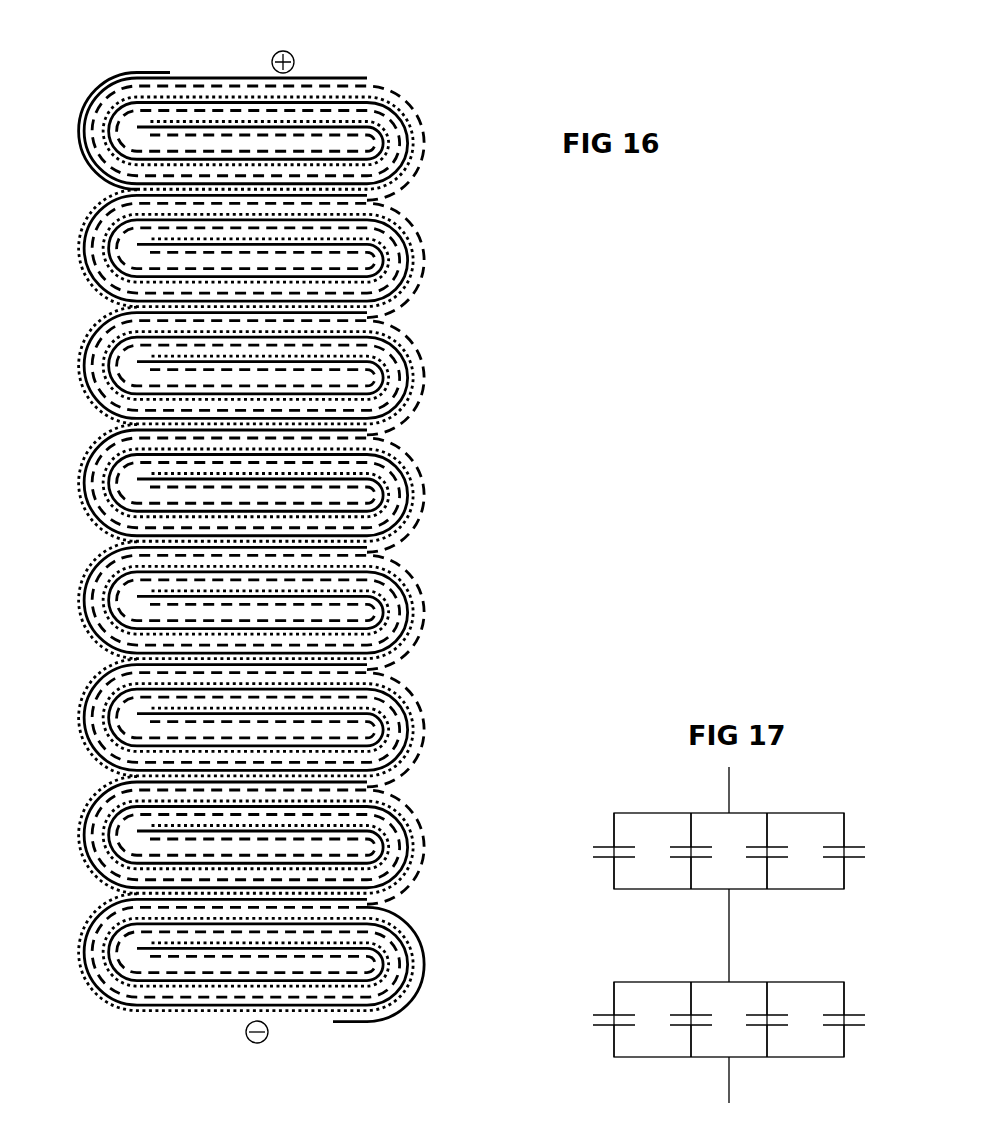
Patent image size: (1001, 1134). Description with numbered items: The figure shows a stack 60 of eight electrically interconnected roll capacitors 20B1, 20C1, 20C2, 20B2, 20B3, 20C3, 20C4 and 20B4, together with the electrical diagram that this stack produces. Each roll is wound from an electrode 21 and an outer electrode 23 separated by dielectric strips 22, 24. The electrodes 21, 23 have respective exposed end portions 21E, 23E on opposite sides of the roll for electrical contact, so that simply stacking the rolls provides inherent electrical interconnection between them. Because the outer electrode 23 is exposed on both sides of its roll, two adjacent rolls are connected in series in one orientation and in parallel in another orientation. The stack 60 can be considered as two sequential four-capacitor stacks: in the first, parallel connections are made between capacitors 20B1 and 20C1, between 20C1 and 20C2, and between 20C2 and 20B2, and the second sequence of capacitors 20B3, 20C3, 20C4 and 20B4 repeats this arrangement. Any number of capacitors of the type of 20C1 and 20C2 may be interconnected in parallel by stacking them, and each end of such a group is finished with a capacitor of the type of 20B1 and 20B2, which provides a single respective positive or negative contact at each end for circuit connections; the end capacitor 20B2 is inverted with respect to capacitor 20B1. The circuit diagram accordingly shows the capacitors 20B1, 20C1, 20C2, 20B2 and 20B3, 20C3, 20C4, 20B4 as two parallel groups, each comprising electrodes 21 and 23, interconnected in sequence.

In FIG. 16, the stack 60 is at (80, 68).
In FIG. 16, the electrode 21 is at (212, 88).
In FIG. 17, the electrode 21 is at (604, 864).
In FIG. 16, the exposed end portion 21E is at (415, 264).
In FIG. 16, the dielectric strip 22 is at (246, 78).
In FIG. 16, the outer electrode 23 is at (92, 147).
In FIG. 17, the outer electrode 23 is at (604, 848).
In FIG. 16, the exposed end portion 23E is at (312, 78).
In FIG. 16, the dielectric strip 24 is at (170, 72).
In FIG. 16, the capacitor 20B1 is at (441, 101).
In FIG. 17, the capacitor 20B1 is at (614, 808).
In FIG. 16, the capacitor 20B2 is at (438, 465).
In FIG. 17, the capacitor 20B2 is at (844, 808).
In FIG. 16, the capacitor 20B3 is at (438, 573).
In FIG. 17, the capacitor 20B3 is at (614, 977).
In FIG. 16, the capacitor 20B4 is at (441, 938).
In FIG. 17, the capacitor 20B4 is at (844, 977).
In FIG. 16, the capacitor 20C1 is at (441, 228).
In FIG. 17, the capacitor 20C1 is at (691, 894).
In FIG. 16, the capacitor 20C2 is at (441, 346).
In FIG. 17, the capacitor 20C2 is at (767, 894).
In FIG. 16, the capacitor 20C3 is at (441, 700).
In FIG. 17, the capacitor 20C3 is at (691, 1062).
In FIG. 16, the capacitor 20C4 is at (441, 816).
In FIG. 17, the capacitor 20C4 is at (767, 1062).